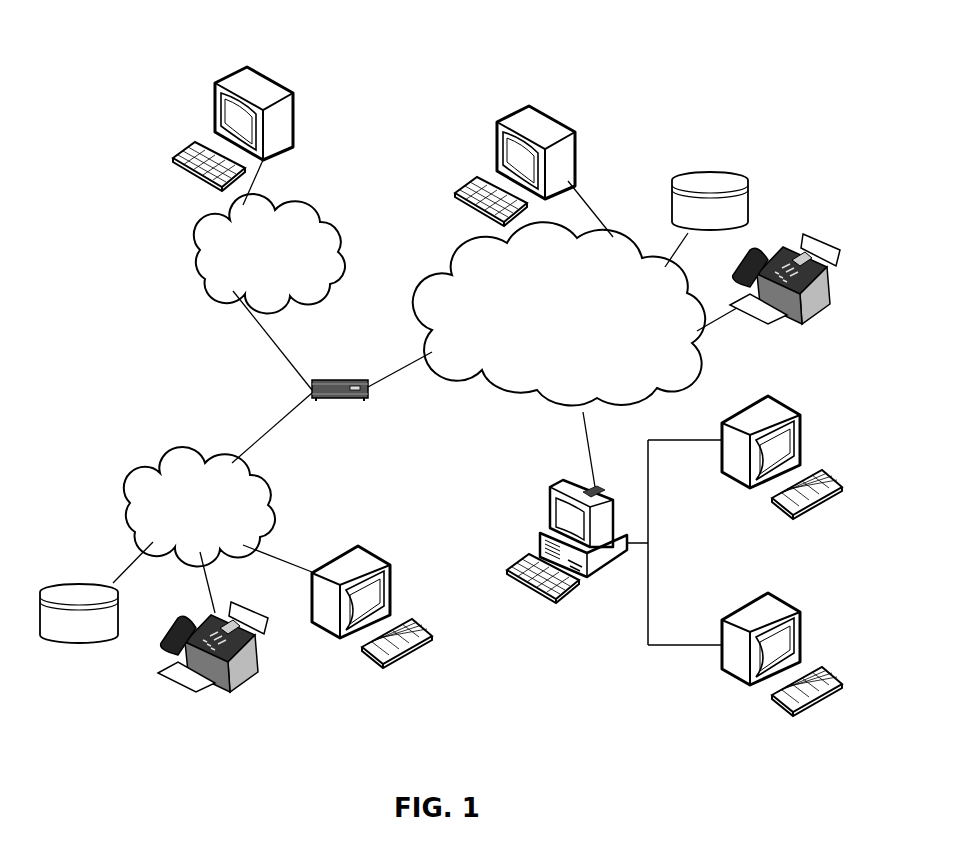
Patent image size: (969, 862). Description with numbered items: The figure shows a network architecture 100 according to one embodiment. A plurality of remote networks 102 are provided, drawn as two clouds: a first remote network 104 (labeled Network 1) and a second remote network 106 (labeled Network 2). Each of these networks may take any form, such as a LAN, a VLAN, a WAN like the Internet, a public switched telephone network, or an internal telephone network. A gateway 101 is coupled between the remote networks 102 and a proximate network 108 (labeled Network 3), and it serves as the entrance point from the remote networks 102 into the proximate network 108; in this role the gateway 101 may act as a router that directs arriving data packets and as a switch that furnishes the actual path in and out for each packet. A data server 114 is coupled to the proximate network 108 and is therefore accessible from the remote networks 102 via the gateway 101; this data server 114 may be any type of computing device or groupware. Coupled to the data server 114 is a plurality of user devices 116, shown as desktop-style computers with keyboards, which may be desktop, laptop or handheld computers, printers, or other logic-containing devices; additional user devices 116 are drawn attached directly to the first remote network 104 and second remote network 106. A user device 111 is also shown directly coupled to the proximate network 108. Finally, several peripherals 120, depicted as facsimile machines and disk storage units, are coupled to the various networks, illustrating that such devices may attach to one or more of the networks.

The network architecture 100 is at (161, 53).
The gateway 101 is at (324, 380).
The remote networks 102 is at (186, 302).
The first remote network 104 is at (133, 480).
The second remote network 106 is at (335, 226).
The proximate network 108 is at (661, 383).
The user device 111 is at (577, 135).
The data server 114 is at (550, 500).
The user devices 116 is at (293, 102).
The peripheral 120 is at (77, 642).